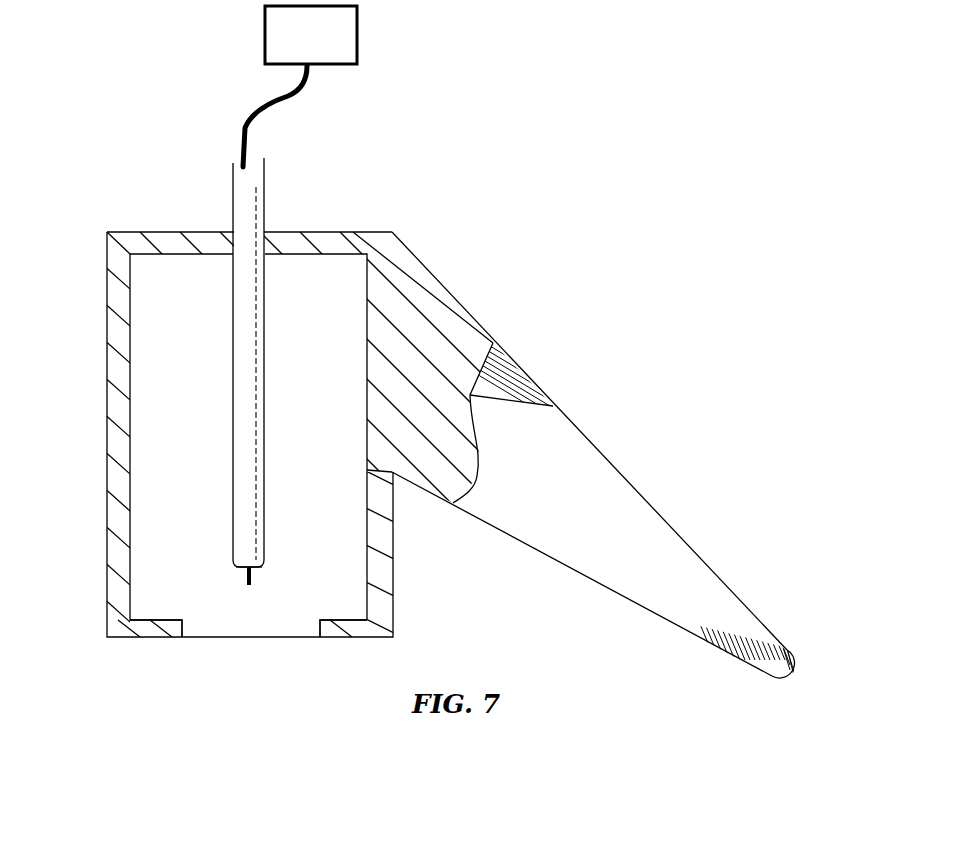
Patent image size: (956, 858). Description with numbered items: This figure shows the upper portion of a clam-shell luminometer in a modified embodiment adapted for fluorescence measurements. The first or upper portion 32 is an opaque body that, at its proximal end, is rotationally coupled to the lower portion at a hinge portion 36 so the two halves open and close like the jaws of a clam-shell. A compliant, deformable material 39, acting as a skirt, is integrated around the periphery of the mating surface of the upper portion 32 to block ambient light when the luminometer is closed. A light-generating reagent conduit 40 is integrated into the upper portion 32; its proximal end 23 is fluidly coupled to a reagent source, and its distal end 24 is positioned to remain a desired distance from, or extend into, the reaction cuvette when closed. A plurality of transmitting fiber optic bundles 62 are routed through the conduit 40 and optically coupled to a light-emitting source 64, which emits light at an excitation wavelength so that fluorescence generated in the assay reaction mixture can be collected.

The proximal end 23 is at (233, 163).
The distal end 24 is at (233, 567).
The first or upper portion 32 is at (645, 492).
The hinge portion 36 is at (783, 645).
The compliant deformable material 39 is at (108, 622).
The light-generating reagent conduit 40 is at (265, 207).
The transmitting fiber optic bundles 62 is at (253, 153).
The light-emitting source 64 is at (298, 50).